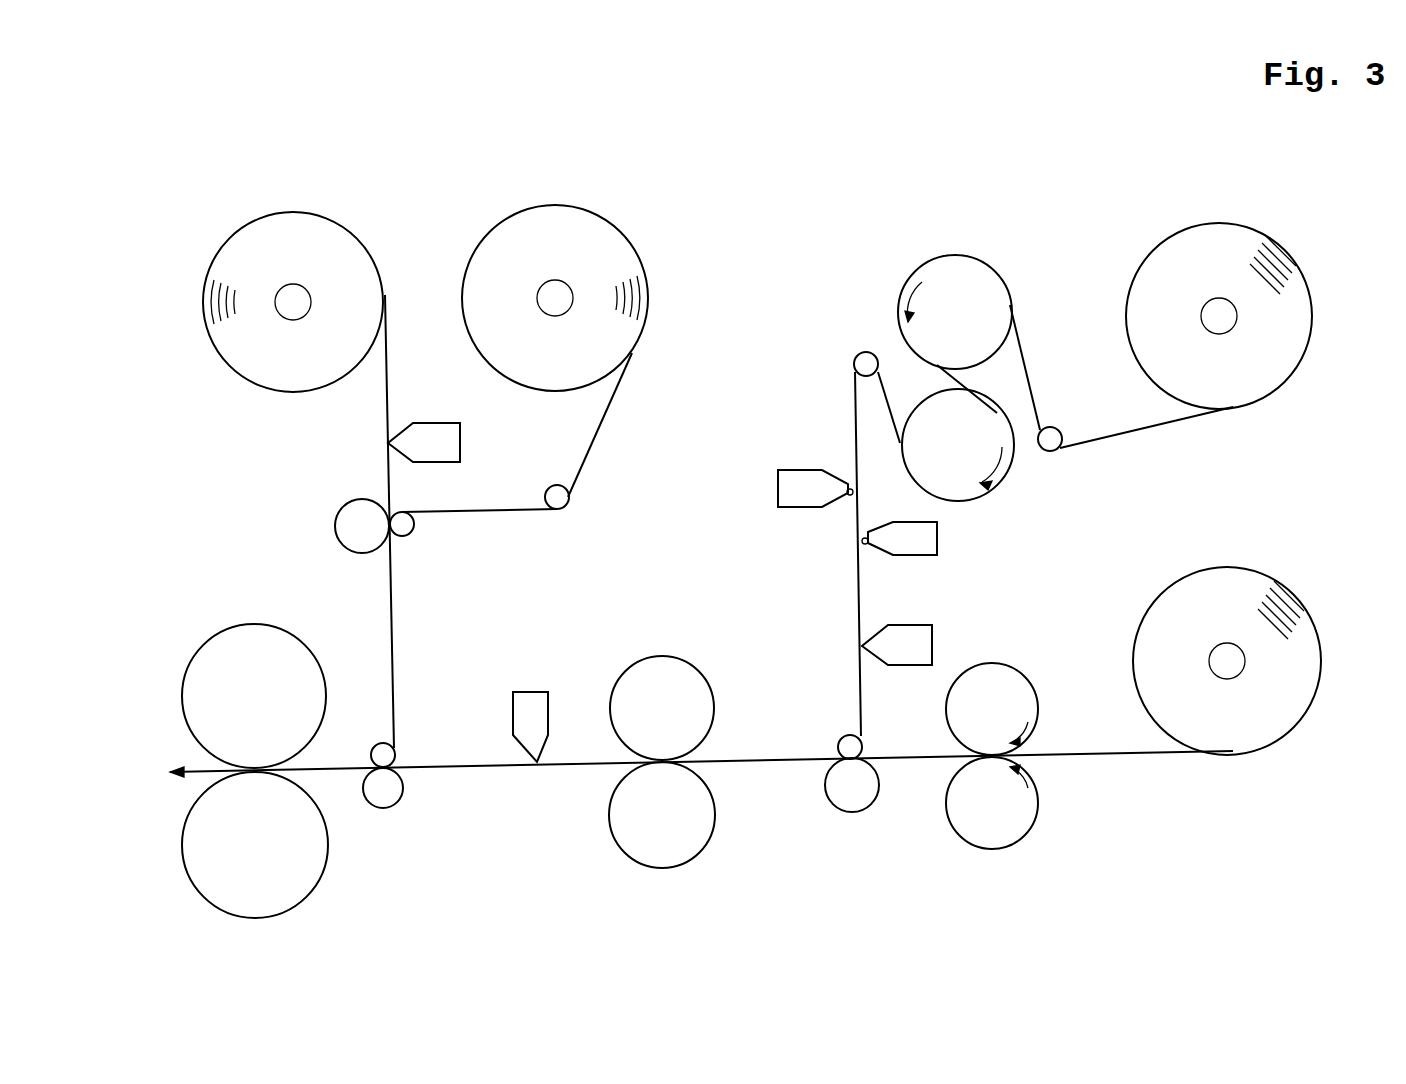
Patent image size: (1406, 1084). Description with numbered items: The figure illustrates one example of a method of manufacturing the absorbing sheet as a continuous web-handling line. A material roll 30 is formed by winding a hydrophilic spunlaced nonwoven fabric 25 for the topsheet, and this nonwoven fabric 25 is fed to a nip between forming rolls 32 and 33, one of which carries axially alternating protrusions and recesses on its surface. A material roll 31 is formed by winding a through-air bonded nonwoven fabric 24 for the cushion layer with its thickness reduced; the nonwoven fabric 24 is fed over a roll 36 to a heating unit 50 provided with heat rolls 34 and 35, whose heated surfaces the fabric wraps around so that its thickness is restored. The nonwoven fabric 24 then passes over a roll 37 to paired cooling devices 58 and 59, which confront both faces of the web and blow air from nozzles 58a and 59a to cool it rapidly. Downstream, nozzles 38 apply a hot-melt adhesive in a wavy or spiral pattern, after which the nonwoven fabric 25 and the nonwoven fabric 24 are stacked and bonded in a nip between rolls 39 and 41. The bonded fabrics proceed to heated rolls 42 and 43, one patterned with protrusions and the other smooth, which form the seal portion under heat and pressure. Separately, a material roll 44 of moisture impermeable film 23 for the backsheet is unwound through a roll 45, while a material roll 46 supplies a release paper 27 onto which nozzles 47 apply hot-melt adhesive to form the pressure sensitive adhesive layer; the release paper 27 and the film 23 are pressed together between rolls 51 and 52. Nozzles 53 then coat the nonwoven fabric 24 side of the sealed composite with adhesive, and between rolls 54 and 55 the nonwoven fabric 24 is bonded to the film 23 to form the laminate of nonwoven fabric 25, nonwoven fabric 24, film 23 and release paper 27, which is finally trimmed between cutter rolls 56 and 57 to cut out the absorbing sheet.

The moisture impermeable film 23 is at (602, 410).
The nonwoven fabric 24 is at (1155, 419).
The nonwoven fabric 25 is at (1182, 749).
The release paper 27 is at (379, 367).
The material roll 30 is at (1277, 572).
The material roll 31 is at (1290, 247).
The forming roll 32 is at (992, 667).
The forming roll 33 is at (995, 827).
The heat roll 34 is at (950, 255).
The heat roll 35 is at (947, 477).
The roll 36 is at (1044, 429).
The roll 37 is at (859, 347).
The nozzles 38 is at (894, 642).
The roll 39 is at (845, 732).
The roll 41 is at (840, 790).
The roll 42 is at (657, 662).
The roll 43 is at (680, 837).
The material roll 44 is at (575, 195).
The roll 45 is at (550, 492).
The material roll 46 is at (325, 207).
The nozzles 47 is at (439, 428).
The heating unit 50 is at (997, 262).
The roll 51 is at (395, 516).
The roll 52 is at (342, 524).
The nozzles 53 is at (522, 694).
The roll 54 is at (374, 740).
The roll 55 is at (389, 780).
The cutter roll 56 is at (242, 629).
The cutter roll 57 is at (302, 862).
The cooling device 58 is at (787, 489).
The nozzle 58a is at (840, 488).
The cooling device 59 is at (890, 520).
The nozzle 59a is at (855, 537).